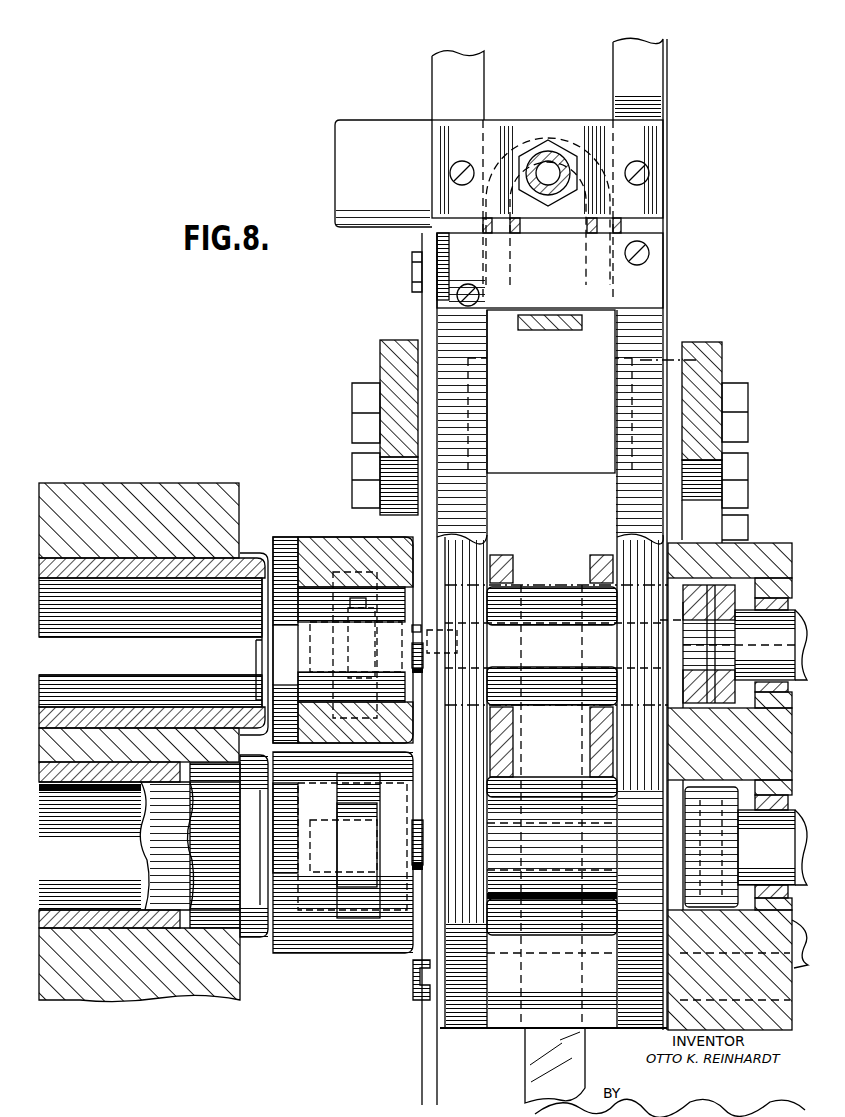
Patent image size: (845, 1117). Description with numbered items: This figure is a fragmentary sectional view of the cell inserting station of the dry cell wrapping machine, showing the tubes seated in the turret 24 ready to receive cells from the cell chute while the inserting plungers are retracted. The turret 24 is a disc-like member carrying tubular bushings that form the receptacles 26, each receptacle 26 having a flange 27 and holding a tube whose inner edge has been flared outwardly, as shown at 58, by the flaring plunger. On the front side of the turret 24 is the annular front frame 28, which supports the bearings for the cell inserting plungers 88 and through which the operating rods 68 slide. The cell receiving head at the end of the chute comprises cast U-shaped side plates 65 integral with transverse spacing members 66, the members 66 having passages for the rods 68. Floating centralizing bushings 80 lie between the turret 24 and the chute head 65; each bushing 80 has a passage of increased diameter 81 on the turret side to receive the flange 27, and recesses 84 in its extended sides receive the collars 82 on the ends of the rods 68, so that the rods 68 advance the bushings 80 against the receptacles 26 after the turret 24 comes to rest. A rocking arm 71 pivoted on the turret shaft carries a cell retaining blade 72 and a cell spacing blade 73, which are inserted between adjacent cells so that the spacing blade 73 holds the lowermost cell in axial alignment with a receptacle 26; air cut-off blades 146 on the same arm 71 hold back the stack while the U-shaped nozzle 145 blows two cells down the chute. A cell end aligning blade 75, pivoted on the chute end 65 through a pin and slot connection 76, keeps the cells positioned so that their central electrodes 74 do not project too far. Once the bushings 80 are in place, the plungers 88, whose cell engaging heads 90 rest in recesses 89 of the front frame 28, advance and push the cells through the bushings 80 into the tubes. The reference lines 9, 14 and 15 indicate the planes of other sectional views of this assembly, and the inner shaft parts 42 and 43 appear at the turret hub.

The section line 9- 9 is at (34, 883).
The section line 14- 14 is at (648, 24).
The section line 15- 15 is at (440, 528).
The turret 24 is at (198, 497).
The receptacle 26 is at (163, 563).
The flange 27 is at (248, 557).
The front frame 28 is at (757, 551).
The drive shaft 42 is at (126, 705).
The inner shaft 43 is at (113, 907).
The flared tube edge 58 is at (262, 690).
The side plates 65 is at (643, 975).
The transverse spacing members 66 is at (545, 605).
The operating rods 68 is at (426, 625).
The arm 71 is at (545, 485).
The cell retaining blade 72 is at (592, 556).
The cell spacing blade 73 is at (602, 747).
The central electrodes 74 is at (445, 745).
The cell end aligning blade 75 is at (430, 762).
The pin and slot connection 76 is at (430, 990).
The floating centralizing bushings 80 is at (345, 545).
The increased diameter passage 81 is at (280, 553).
The collars 82 is at (362, 598).
The recesses 84 is at (340, 790).
The cell inserting plungers 88 is at (788, 684).
The recesses 89 is at (748, 588).
The cell engaging heads 90 is at (687, 695).
The nozzle 145 is at (597, 228).
The blades 146 is at (560, 326).